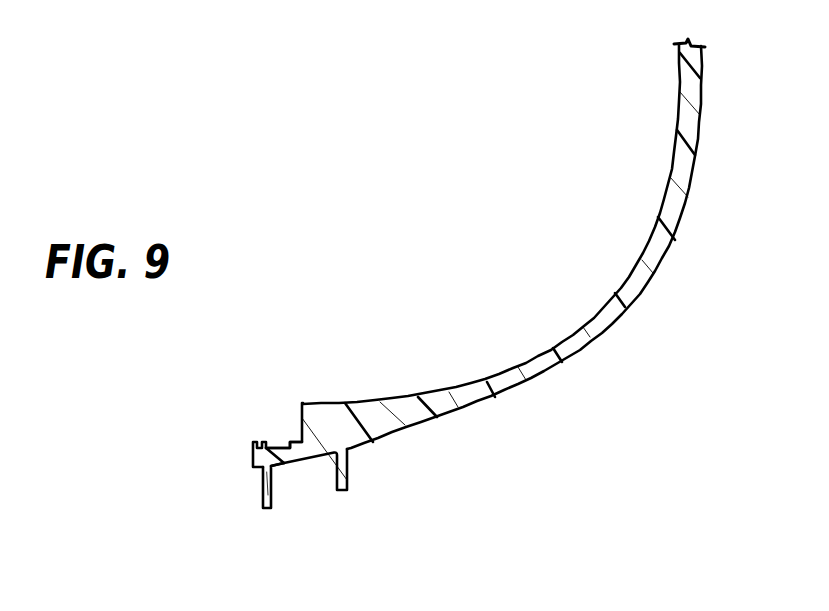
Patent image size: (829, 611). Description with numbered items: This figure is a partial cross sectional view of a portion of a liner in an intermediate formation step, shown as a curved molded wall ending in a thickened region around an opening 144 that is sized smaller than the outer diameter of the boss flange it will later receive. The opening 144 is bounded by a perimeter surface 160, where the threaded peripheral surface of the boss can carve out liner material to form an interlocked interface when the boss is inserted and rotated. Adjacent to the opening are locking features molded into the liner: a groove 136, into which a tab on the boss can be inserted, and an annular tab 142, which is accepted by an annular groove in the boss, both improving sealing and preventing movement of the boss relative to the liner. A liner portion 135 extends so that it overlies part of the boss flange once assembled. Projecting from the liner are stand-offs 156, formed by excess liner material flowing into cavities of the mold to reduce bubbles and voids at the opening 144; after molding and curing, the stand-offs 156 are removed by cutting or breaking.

The opening 144 is at (264, 444).
The perimeter surface 160 is at (301, 403).
The groove 136 is at (281, 446).
The annular tab 142 is at (258, 445).
The liner portion 135 is at (265, 460).
The stand-offs 156 is at (337, 475).